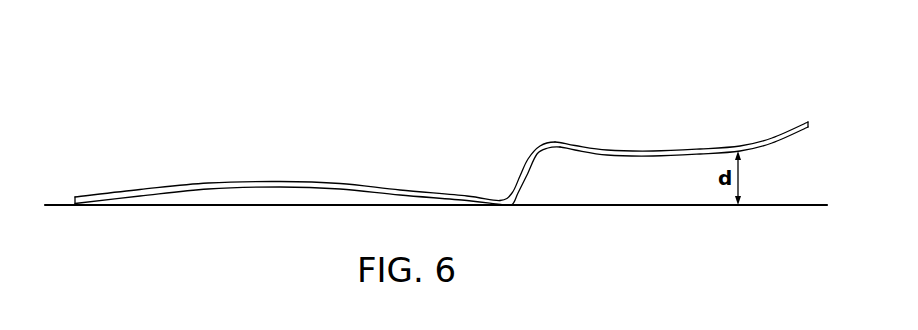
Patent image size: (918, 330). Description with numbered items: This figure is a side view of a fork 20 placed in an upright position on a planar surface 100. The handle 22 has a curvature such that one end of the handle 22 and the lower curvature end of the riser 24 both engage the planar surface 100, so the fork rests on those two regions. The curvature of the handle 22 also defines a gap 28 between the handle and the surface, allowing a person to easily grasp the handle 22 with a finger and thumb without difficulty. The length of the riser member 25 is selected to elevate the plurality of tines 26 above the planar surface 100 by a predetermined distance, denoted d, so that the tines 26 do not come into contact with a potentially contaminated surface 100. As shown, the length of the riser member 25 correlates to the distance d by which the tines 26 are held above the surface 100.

The fork 20 is at (366, 90).
The handle 22 is at (209, 183).
The riser 24 is at (527, 167).
The riser member 25 is at (530, 173).
The plurality of tines 26 is at (707, 148).
The gap 28 is at (278, 194).
The planar surface 100 is at (761, 202).